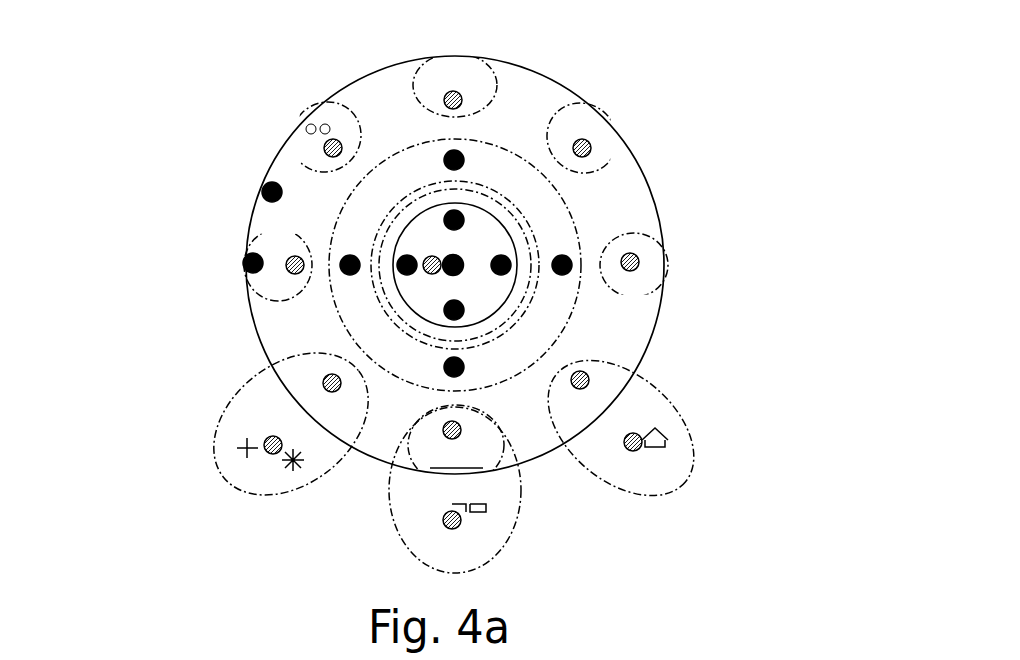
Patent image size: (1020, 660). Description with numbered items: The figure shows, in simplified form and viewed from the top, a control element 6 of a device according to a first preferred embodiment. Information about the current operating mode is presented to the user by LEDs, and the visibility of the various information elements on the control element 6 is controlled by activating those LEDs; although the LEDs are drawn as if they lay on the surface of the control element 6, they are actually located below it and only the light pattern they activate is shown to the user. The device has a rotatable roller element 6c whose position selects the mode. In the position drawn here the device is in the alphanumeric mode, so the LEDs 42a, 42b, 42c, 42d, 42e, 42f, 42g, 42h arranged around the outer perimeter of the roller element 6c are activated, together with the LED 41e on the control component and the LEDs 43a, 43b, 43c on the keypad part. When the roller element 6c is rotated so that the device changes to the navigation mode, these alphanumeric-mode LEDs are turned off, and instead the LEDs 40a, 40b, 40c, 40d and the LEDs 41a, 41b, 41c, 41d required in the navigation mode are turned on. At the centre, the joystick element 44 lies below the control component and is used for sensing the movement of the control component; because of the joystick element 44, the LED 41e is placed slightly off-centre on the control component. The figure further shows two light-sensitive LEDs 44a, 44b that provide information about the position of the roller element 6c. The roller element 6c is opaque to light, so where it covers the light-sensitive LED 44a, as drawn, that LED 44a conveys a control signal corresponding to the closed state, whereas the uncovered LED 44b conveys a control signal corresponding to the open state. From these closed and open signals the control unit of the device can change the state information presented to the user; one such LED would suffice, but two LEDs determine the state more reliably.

The control element 6 is at (226, 150).
The roller element 6c is at (627, 177).
The joystick element 44 is at (450, 255).
The light-sensitive LED 44a is at (262, 191).
The light-sensitive LED 44b is at (244, 263).
The LED 41a is at (510, 261).
The LED 41b is at (463, 218).
The LED 41c is at (404, 258).
The LED 41d is at (463, 310).
The LED 41e is at (428, 272).
The LED 40a is at (571, 265).
The LED 40b is at (463, 366).
The LED 40c is at (343, 270).
The LED 40d is at (462, 158).
The LED 42a is at (590, 144).
The LED 42b is at (639, 260).
The LED 42c is at (589, 378).
The LED 42d is at (460, 434).
The LED 42e is at (324, 386).
The LED 42f is at (290, 271).
The LED 42g is at (329, 142).
The LED 42h is at (459, 95).
The LED 43a is at (642, 441).
The LED 43b is at (460, 524).
The LED 43c is at (265, 450).